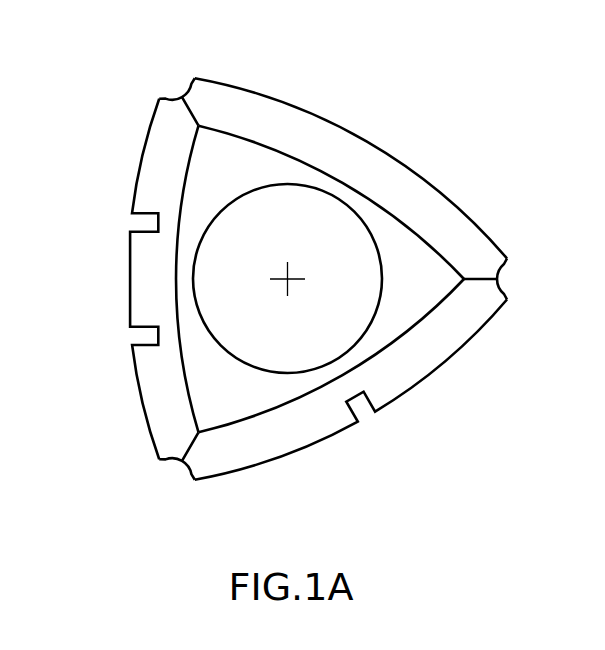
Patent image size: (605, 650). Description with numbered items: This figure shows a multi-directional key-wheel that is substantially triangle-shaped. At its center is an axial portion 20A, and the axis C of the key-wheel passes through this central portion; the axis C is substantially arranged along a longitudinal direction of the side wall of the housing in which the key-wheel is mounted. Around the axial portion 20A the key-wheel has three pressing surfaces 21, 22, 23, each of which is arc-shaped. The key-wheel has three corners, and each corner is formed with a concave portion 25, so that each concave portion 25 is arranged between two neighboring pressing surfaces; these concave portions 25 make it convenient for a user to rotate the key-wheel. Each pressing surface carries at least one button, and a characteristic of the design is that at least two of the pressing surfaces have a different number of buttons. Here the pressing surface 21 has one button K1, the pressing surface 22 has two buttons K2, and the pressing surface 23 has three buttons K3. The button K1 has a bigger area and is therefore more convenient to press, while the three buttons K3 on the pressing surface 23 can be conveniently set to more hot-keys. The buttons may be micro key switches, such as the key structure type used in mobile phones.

The axial portion 20A is at (313, 187).
The pressing surface 21 is at (273, 120).
The pressing surface 22 is at (435, 343).
The pressing surface 23 is at (167, 168).
The concave portion 25 is at (179, 93).
The axis C is at (288, 278).
The button K1 is at (440, 221).
The button K2 is at (308, 426).
The button K3 is at (160, 394).